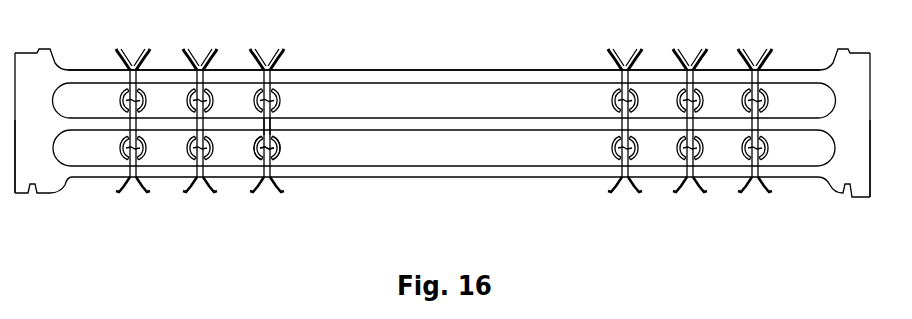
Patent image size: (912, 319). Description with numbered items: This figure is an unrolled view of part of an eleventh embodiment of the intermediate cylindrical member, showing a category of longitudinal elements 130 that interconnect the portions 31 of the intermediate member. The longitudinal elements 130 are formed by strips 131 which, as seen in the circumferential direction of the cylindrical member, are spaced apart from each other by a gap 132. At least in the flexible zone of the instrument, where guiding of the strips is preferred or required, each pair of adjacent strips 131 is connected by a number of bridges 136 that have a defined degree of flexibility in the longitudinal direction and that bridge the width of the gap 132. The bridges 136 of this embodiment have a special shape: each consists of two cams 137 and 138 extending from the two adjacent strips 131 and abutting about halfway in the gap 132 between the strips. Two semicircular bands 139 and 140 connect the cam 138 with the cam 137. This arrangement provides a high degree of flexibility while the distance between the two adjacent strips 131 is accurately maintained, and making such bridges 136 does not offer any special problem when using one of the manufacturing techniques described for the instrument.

The longitudinal element 130 is at (477, 68).
The strip 131 is at (365, 81).
The gap 132 is at (305, 97).
The bridge 136 is at (289, 148).
The cam 137 is at (261, 158).
The cam 138 is at (258, 136).
The semicircular band 139 is at (277, 155).
The semicircular band 140 is at (262, 135).
The portion of the intermediate cylindrical member 31 is at (33, 193).